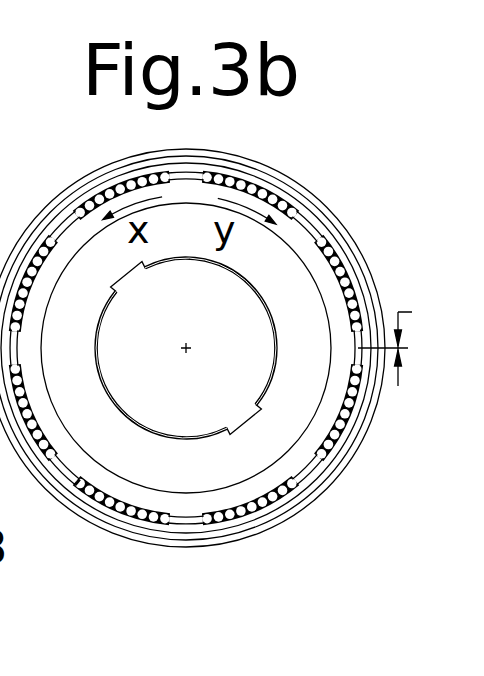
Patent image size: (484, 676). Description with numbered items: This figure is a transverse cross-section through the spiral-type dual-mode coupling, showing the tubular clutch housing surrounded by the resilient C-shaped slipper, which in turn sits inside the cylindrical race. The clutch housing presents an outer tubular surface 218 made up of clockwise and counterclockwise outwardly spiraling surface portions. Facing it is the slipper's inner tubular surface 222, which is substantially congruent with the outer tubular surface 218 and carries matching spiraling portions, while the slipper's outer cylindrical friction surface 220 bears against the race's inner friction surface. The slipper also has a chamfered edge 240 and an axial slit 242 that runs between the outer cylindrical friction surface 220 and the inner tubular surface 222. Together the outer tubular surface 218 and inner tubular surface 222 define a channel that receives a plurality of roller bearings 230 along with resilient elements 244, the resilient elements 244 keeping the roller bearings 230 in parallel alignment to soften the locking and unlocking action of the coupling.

The outer tubular surface 218 is at (298, 237).
The outer cylindrical friction surface 220 is at (355, 449).
The inner tubular surface 222 is at (188, 521).
The roller bearings 230 is at (110, 195).
The chamfered edge 240 is at (194, 159).
The slit 242 is at (417, 365).
The resilient elements 244 is at (87, 486).